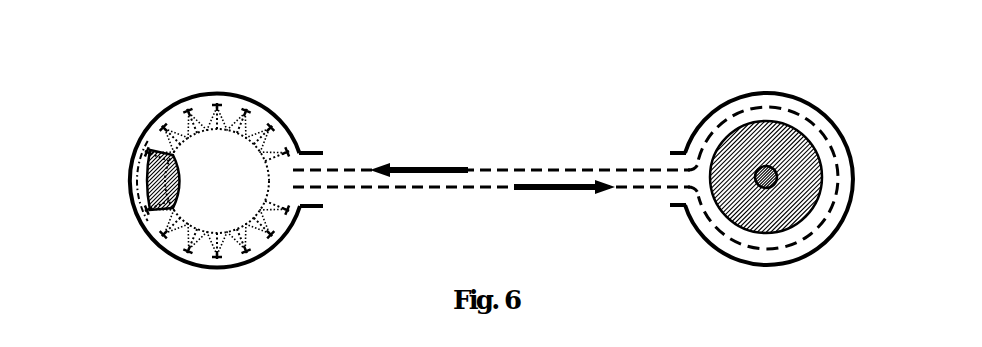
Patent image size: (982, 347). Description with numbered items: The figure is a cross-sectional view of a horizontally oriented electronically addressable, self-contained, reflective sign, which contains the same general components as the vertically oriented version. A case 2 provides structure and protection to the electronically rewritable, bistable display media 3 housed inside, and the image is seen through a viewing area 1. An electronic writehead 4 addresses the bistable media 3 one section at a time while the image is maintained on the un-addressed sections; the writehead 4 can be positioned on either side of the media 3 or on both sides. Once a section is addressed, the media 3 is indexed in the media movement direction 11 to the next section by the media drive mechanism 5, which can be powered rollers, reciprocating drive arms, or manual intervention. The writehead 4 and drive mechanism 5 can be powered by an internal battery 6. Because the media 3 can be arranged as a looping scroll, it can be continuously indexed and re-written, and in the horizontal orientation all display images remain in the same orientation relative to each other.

The viewing area 1 is at (518, 161).
The case 2 is at (825, 115).
The display media 3 is at (728, 119).
The electronic writehead 4 is at (148, 158).
The media drive mechanism 5 is at (237, 150).
The battery 6 is at (805, 215).
The media movement direction 11 is at (410, 166).